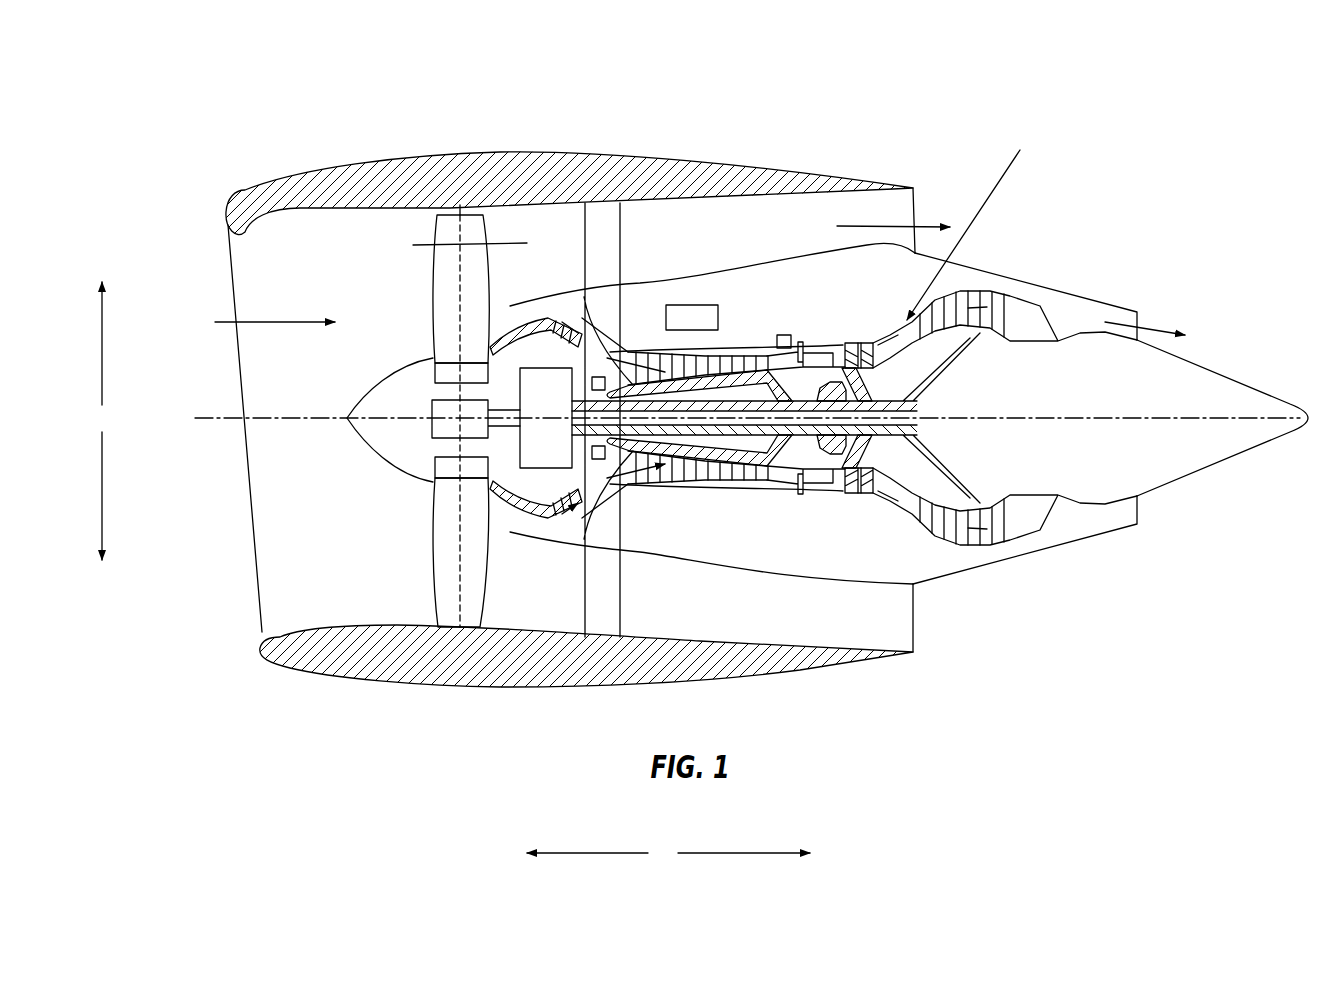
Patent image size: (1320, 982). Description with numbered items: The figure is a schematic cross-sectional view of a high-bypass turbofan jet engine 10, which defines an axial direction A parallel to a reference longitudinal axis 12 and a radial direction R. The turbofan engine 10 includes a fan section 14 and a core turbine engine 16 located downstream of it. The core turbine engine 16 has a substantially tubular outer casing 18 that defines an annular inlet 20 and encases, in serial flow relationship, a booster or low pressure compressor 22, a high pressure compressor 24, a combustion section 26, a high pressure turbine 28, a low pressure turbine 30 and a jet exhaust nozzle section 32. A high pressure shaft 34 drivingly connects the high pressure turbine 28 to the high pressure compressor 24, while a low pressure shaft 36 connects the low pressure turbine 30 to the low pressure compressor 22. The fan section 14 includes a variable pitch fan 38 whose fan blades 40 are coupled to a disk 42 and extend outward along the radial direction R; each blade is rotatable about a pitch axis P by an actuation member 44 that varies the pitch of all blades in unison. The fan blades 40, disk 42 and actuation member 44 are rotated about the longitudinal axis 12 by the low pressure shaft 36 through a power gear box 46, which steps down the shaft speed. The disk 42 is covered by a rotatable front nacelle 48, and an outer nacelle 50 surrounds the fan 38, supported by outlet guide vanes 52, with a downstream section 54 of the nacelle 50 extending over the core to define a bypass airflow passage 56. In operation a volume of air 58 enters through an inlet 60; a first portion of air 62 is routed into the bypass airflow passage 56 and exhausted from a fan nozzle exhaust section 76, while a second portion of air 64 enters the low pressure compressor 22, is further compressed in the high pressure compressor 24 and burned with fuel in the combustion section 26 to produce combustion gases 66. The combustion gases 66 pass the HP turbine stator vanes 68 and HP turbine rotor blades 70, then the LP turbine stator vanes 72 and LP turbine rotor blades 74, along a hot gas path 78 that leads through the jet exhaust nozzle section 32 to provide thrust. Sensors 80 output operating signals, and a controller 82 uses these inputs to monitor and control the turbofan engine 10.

The turbofan jet engine 10 is at (1058, 165).
The longitudinal axis 12 is at (1082, 416).
The fan section 14 is at (482, 118).
The core turbine engine 16 is at (787, 316).
The outer casing 18 is at (775, 581).
The annular inlet 20 is at (520, 533).
The low pressure compressor 22 is at (586, 484).
The high pressure compressor 24 is at (650, 482).
The combustion section 26 is at (815, 486).
The high pressure turbine 28 is at (958, 474).
The low pressure turbine 30 is at (997, 548).
The jet exhaust nozzle section 32 is at (1057, 528).
The high pressure shaft 34 is at (862, 385).
The low pressure shaft 36 is at (940, 390).
The variable pitch fan 38 is at (402, 468).
The fan blades 40 is at (432, 568).
The disk 42 is at (433, 378).
The actuation member 44 is at (430, 400).
The power gear box 46 is at (560, 393).
The rotatable front nacelle 48 is at (346, 419).
The outer nacelle 50 is at (483, 690).
The outlet guide vanes 52 is at (622, 235).
The downstream section of the nacelle 54 is at (838, 190).
The bypass airflow passage 56 is at (712, 263).
The volume of air 58 is at (278, 320).
The inlet 60 is at (255, 640).
The first portion of air 62 is at (453, 240).
The second portion of air 64 is at (508, 312).
The combustion gases 66 is at (963, 295).
The HP turbine stator vanes 68 is at (838, 500).
The HP turbine rotor blades 70 is at (918, 450).
The LP turbine stator vanes 72 is at (920, 528).
The LP turbine rotor blades 74 is at (935, 542).
The fan nozzle exhaust section 76 is at (908, 213).
The hot gas path 78 is at (971, 218).
The sensors 80 is at (598, 376).
The controller 82 is at (705, 330).
The pitch axis P is at (470, 226).
The radial direction R is at (102, 421).
The axial direction A is at (668, 853).